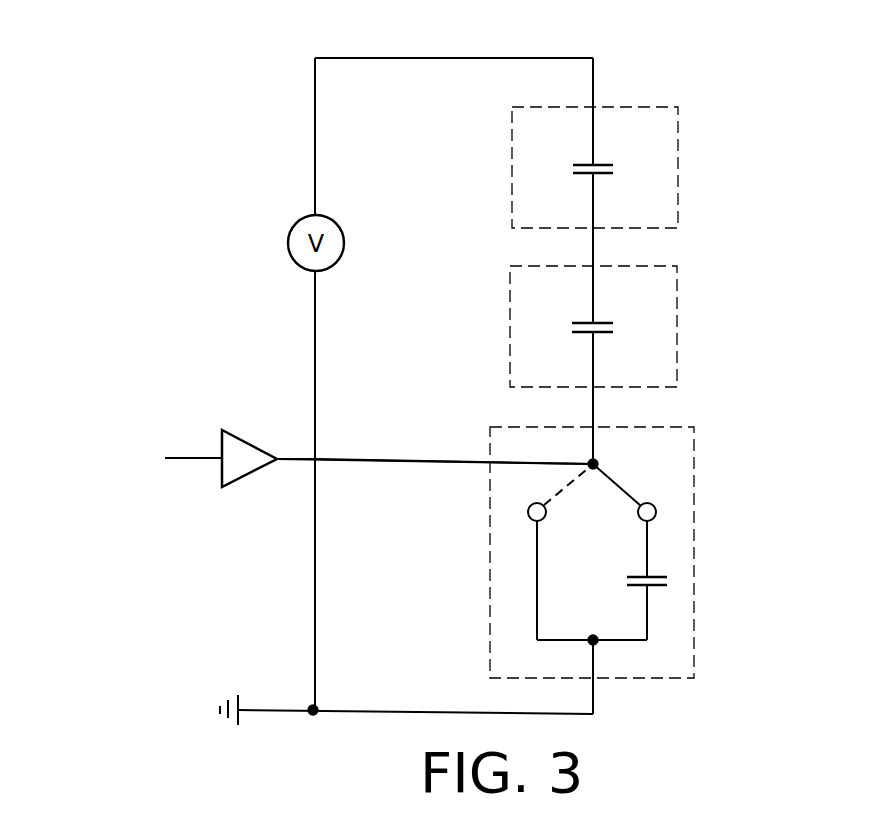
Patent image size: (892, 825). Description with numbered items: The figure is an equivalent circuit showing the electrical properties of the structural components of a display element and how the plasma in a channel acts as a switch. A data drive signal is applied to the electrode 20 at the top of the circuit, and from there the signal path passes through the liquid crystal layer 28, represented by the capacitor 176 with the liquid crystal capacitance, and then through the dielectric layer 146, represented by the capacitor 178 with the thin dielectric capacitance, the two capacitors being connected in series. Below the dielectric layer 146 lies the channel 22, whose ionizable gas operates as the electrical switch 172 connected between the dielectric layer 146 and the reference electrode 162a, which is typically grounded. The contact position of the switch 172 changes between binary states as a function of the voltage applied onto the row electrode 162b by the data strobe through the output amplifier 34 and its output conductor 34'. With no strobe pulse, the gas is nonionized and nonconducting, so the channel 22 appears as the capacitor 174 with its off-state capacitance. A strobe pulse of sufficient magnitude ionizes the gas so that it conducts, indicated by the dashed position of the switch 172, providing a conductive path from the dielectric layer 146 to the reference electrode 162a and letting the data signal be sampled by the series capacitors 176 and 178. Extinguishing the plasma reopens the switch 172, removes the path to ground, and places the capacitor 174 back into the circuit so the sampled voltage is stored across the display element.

The electrode 20 is at (478, 57).
The liquid crystal layer 28 is at (680, 167).
The capacitor 176 is at (576, 164).
The dielectric layer 146 is at (680, 328).
The capacitor 178 is at (587, 322).
The channel 22 is at (694, 545).
The electrical switch 172 is at (622, 488).
The capacitor 174 is at (655, 589).
The output amplifier 34 is at (249, 428).
The output conductor 34' is at (286, 496).
The row electrode 162b is at (460, 463).
The reference electrode 162a is at (462, 712).